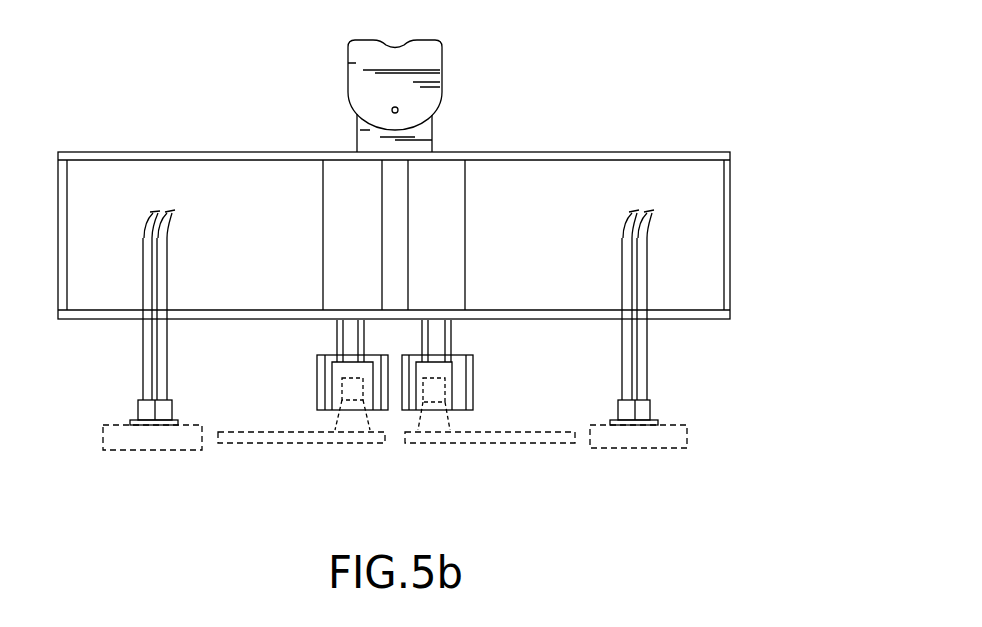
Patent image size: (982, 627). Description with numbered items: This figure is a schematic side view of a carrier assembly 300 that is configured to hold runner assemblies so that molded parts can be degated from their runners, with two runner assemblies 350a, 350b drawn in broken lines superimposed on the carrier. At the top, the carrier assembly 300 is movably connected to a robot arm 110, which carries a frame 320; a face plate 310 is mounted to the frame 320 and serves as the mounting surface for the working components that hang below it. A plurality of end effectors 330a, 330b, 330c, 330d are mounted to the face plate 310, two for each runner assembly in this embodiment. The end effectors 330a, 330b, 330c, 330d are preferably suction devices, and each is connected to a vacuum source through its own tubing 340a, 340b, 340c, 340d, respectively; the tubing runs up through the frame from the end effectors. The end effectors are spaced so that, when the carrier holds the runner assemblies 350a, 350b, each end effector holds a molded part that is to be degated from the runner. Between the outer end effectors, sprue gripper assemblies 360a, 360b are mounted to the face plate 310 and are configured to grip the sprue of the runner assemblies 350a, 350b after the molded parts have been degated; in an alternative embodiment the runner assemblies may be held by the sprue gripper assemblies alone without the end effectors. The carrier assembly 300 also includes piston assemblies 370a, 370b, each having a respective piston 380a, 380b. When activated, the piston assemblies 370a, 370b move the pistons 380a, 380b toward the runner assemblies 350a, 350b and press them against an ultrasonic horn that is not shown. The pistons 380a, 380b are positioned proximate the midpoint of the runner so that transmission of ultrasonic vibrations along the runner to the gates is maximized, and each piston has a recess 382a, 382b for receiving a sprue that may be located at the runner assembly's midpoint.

The robot arm 110 is at (432, 60).
The carrier assembly 300 is at (774, 165).
The face plate 310 is at (730, 315).
The frame 320 is at (657, 152).
The end effector 330a is at (145, 425).
The end effector 330b is at (172, 410).
The end effector 330c is at (628, 420).
The end effector 330d is at (645, 410).
The tubing 340a is at (148, 216).
The tubing 340b is at (169, 212).
The tubing 340c is at (626, 222).
The tubing 340d is at (648, 222).
The runner assembly 350a is at (357, 441).
The runner assembly 350b is at (525, 441).
The sprue gripper assembly 360a is at (317, 370).
The sprue gripper assembly 360b is at (466, 368).
The piston assembly 370a is at (350, 240).
The piston assembly 370b is at (455, 245).
The piston 380a is at (368, 396).
The piston 380b is at (450, 392).
The recess 382a is at (340, 390).
The recess 382b is at (437, 380).